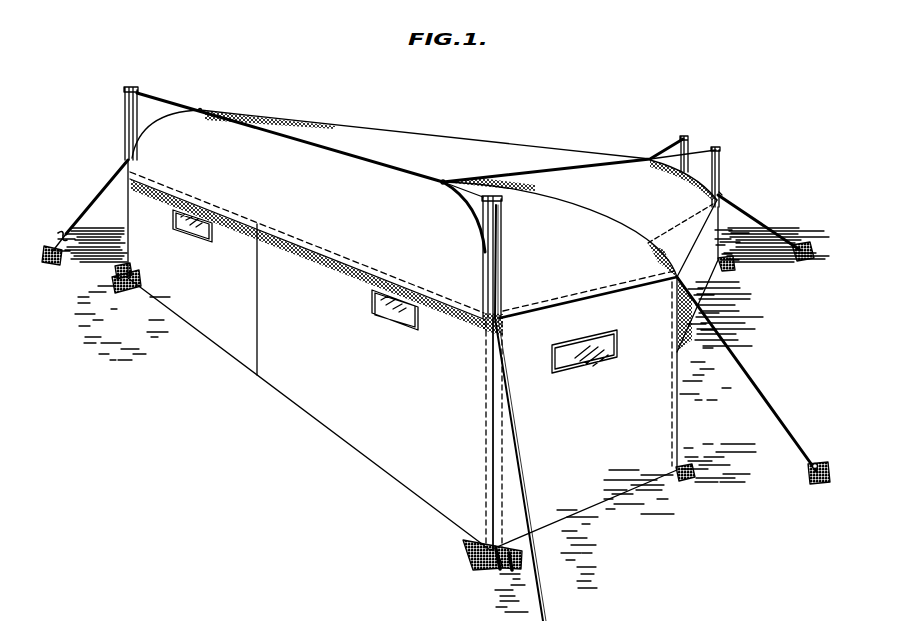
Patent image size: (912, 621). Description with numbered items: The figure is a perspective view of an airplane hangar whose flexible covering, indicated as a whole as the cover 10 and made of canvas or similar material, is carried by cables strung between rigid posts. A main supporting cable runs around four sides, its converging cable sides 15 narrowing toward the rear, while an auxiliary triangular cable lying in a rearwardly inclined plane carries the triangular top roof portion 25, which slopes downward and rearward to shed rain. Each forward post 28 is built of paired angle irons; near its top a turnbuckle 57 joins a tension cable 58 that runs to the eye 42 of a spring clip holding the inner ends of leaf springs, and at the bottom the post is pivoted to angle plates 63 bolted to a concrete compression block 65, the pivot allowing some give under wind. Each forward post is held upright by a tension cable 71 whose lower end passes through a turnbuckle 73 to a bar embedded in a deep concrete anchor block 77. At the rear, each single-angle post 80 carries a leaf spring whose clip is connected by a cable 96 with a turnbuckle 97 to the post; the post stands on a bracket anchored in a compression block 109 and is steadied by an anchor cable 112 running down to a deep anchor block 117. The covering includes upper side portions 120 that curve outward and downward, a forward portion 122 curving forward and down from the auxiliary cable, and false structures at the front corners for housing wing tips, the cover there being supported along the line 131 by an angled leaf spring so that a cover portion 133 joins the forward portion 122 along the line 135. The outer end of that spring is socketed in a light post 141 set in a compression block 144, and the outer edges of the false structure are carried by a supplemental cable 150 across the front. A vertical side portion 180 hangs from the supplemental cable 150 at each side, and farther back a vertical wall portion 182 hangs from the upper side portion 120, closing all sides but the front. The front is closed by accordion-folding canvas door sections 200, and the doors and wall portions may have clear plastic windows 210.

The flexible covering 10 is at (496, 159).
The converging cable side 15 is at (686, 215).
The top roof portion 25 is at (423, 142).
The forward post 28 is at (125, 130).
The upstanding eye 42 is at (200, 110).
The turnbuckle 57 is at (197, 613).
The tension cable 58 is at (162, 100).
The angle plates 63 is at (113, 281).
The compression block 65 is at (127, 290).
The tension cable 71 is at (95, 201).
The turnbuckle 73 is at (61, 233).
The anchor block 77 is at (48, 266).
The rear post 80 is at (717, 148).
The cable 96 is at (678, 143).
The turnbuckle 97 is at (707, 179).
The compression block 109 is at (730, 273).
The anchor cable 112 is at (760, 220).
The anchor block 117 is at (798, 262).
The upper side portion 120 is at (577, 178).
The forward cover portion 122 is at (308, 251).
The support line 131 is at (620, 222).
The false structure cover portion 133 is at (586, 292).
The juncture line 135 is at (171, 130).
The post 141 is at (672, 400).
The compression block 144 is at (686, 478).
The supplemental cable 150 is at (537, 300).
The vertical side portion 180 is at (583, 413).
The vertical wall portion 182 is at (697, 276).
The door section 200 is at (263, 383).
The window 210 is at (194, 238).